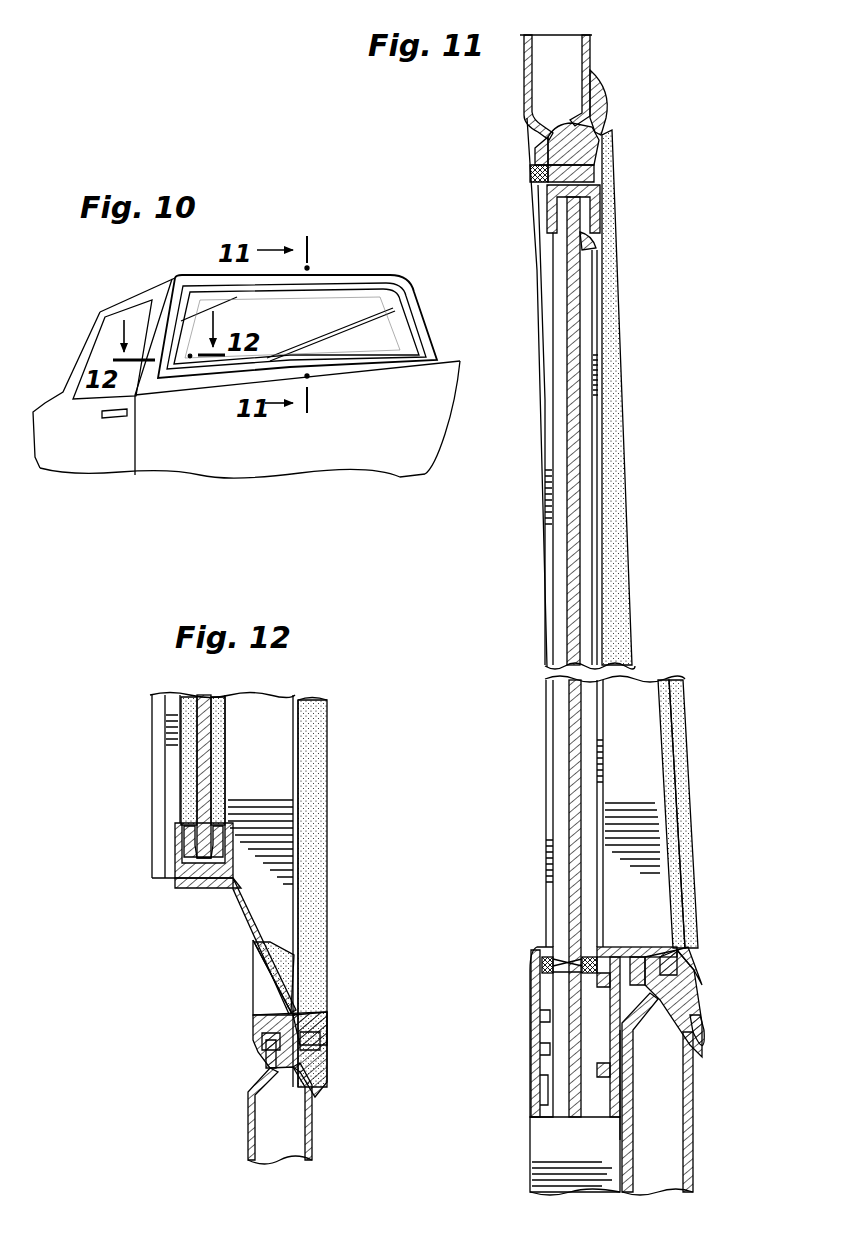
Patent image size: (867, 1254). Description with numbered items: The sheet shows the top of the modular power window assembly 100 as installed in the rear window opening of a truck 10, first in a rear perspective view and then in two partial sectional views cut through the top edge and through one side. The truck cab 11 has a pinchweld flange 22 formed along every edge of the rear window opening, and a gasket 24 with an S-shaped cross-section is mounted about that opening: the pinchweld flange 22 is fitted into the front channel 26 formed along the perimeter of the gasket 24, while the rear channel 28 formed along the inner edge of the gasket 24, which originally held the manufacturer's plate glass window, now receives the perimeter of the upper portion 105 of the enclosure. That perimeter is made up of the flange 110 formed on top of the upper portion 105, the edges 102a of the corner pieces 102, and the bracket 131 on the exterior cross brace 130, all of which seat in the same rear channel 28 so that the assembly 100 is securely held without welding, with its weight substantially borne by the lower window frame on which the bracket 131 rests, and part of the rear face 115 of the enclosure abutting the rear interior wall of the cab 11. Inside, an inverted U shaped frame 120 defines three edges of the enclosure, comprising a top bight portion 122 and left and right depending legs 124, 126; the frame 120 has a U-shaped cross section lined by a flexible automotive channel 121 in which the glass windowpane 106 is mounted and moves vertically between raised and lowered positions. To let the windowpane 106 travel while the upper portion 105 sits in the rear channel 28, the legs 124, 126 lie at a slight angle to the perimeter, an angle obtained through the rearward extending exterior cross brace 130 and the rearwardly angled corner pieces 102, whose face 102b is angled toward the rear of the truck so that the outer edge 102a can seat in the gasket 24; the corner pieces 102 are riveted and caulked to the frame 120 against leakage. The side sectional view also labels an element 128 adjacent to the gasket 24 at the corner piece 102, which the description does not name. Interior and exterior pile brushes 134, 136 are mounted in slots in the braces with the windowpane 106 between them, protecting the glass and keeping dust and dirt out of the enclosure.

In FIG. 10, the truck 10 is at (69, 328).
In FIG. 10, the truck cab 11 is at (135, 292).
In FIG. 11, the truck cab 11 is at (693, 1175).
In FIG. 11, the pinchweld flange 22 is at (537, 152).
In FIG. 12, the pinchweld flange 22 is at (262, 1045).
In FIG. 10, the gasket 24 is at (400, 298).
In FIG. 11, the gasket 24 is at (612, 101).
In FIG. 12, the gasket 24 is at (336, 1098).
In FIG. 11, the front channel 26 is at (535, 172).
In FIG. 12, the front channel 26 is at (262, 1040).
In FIG. 11, the rear channel 28 is at (600, 153).
In FIG. 10, the modular power window assembly 100 is at (350, 312).
In FIG. 11, the modular power window assembly 100 is at (668, 300).
In FIG. 10, the corner pieces 102 is at (413, 341).
In FIG. 11, the corner pieces 102 is at (646, 797).
In FIG. 12, the corner pieces 102 is at (278, 932).
In FIG. 12, the edges of the corner pieces 102a is at (300, 1032).
In FIG. 12, the face of the corner piece 102b is at (285, 958).
In FIG. 10, the upper portion 105 is at (197, 275).
In FIG. 11, the upper portion 105 is at (628, 403).
In FIG. 10, the glass windowpane 106 is at (310, 300).
In FIG. 11, the glass windowpane 106 is at (585, 495).
In FIG. 12, the glass windowpane 106 is at (205, 713).
In FIG. 11, the flange 110 is at (596, 183).
In FIG. 11, the rear face 115 is at (625, 1140).
In FIG. 12, the inverted U shaped frame 120 is at (170, 862).
In FIG. 11, the flexible automotive channel 121 is at (597, 246).
In FIG. 12, the flexible automotive channel 121 is at (192, 823).
In FIG. 11, the top bight portion 122 is at (602, 213).
In FIG. 11, the left depending leg 124 is at (546, 574).
In FIG. 12, the right depending leg 126 is at (240, 852).
In FIG. 12, the seal lip 128 is at (305, 1050).
In FIG. 11, the exterior cross brace 130 is at (624, 946).
In FIG. 12, the exterior cross brace 130 is at (277, 742).
In FIG. 11, the bracket 131 is at (700, 953).
In FIG. 11, the interior pile brush 134 is at (535, 962).
In FIG. 11, the exterior pile brush 136 is at (597, 946).